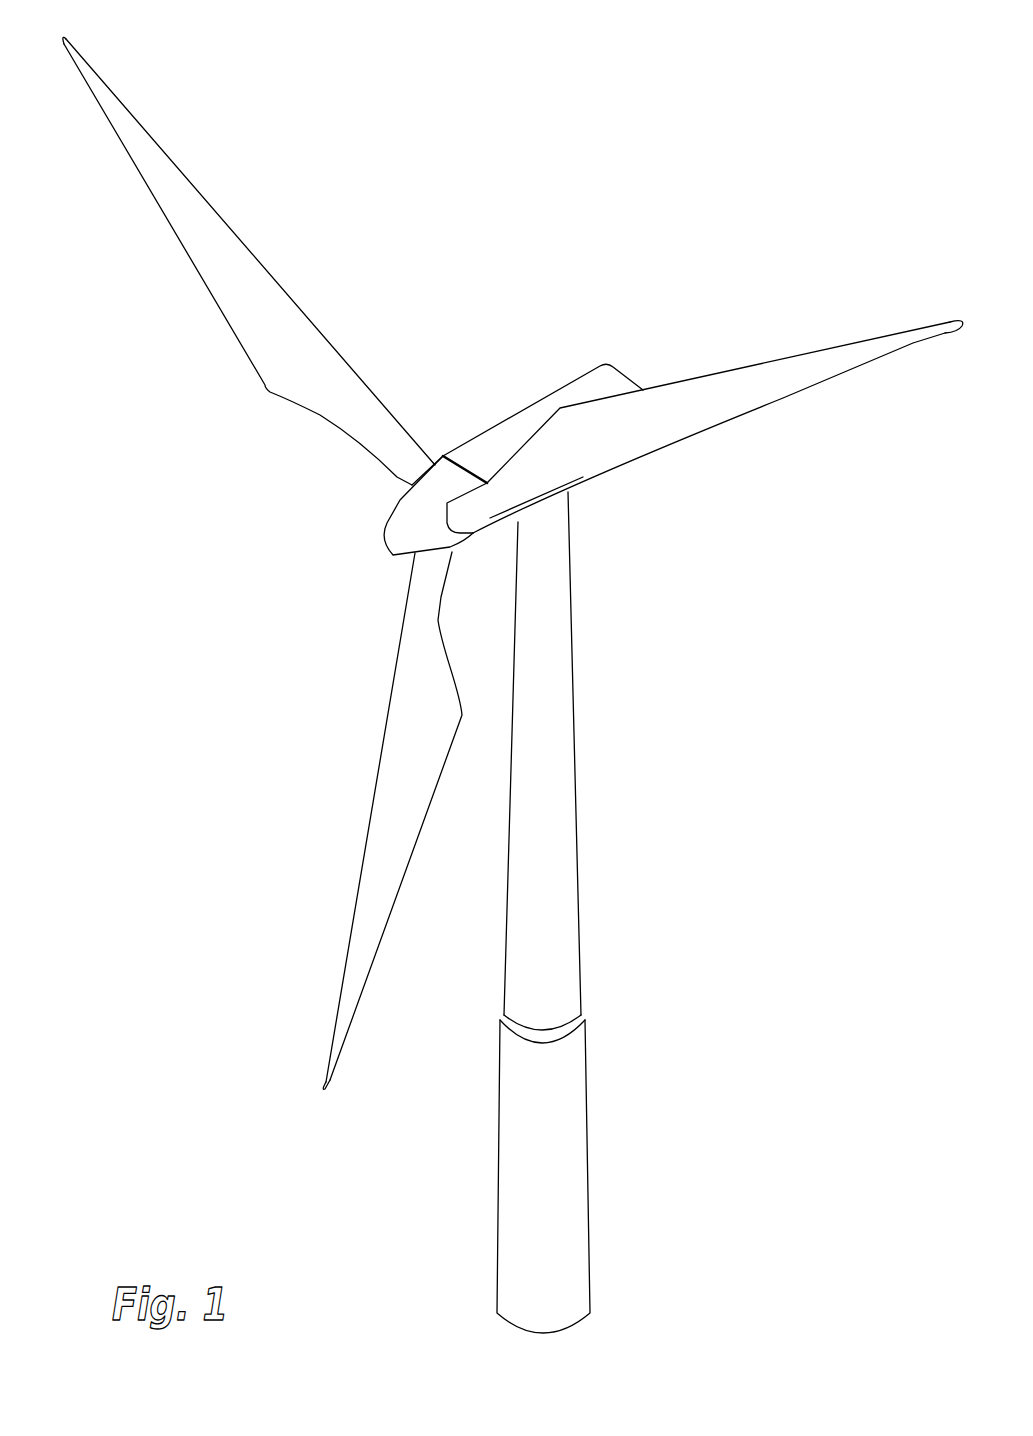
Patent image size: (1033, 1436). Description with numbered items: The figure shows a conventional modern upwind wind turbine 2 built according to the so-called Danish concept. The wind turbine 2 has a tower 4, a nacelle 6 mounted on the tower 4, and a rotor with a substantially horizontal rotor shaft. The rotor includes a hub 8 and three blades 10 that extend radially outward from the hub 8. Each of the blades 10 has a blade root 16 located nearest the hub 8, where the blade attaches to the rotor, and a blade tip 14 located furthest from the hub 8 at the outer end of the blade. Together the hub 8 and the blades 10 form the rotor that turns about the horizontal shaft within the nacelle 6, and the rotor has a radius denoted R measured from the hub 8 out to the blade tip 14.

The wind turbine 2 is at (513, 685).
The tower 4 is at (562, 760).
The nacelle 6 is at (487, 430).
The hub 8 is at (387, 528).
The blades 10 is at (282, 362).
The blade tip 14 is at (124, 96).
The blade root 16 is at (410, 484).